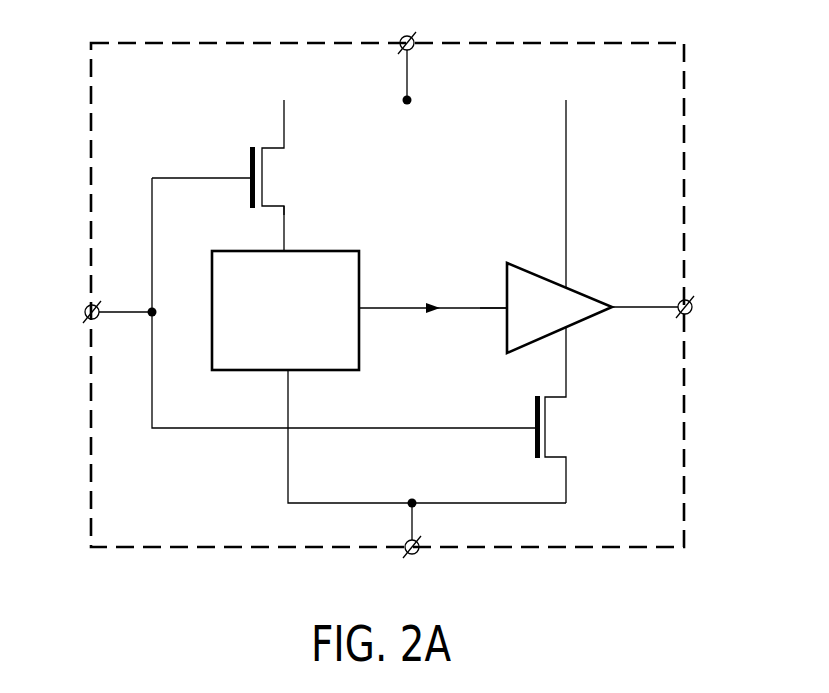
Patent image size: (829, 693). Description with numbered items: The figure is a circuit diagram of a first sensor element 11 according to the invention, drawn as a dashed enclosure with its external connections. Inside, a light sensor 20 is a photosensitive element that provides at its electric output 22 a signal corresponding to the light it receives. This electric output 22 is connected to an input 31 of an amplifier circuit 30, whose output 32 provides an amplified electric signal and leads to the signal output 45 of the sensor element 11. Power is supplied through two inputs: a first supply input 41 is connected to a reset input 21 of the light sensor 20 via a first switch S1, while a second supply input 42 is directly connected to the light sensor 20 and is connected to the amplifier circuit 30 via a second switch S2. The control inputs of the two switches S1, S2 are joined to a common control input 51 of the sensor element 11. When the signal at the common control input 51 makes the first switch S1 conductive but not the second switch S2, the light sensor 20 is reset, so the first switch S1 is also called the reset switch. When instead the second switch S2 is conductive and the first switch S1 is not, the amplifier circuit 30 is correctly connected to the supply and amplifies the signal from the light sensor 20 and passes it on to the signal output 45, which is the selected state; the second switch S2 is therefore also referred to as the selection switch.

The first sensor element 11 is at (686, 83).
The light sensor 20 is at (285, 310).
The reset input 21 is at (286, 247).
The electric output 22 is at (362, 305).
The amplifier circuit 30 is at (559, 308).
The input of amplifier circuit 31 is at (505, 311).
The output of amplifier circuit 32 is at (612, 302).
The first supply input 41 is at (402, 37).
The second supply input 42 is at (418, 553).
The signal output 45 is at (693, 310).
The common control input 51 is at (85, 311).
The first switch S1 is at (276, 182).
The second switch S2 is at (560, 431).